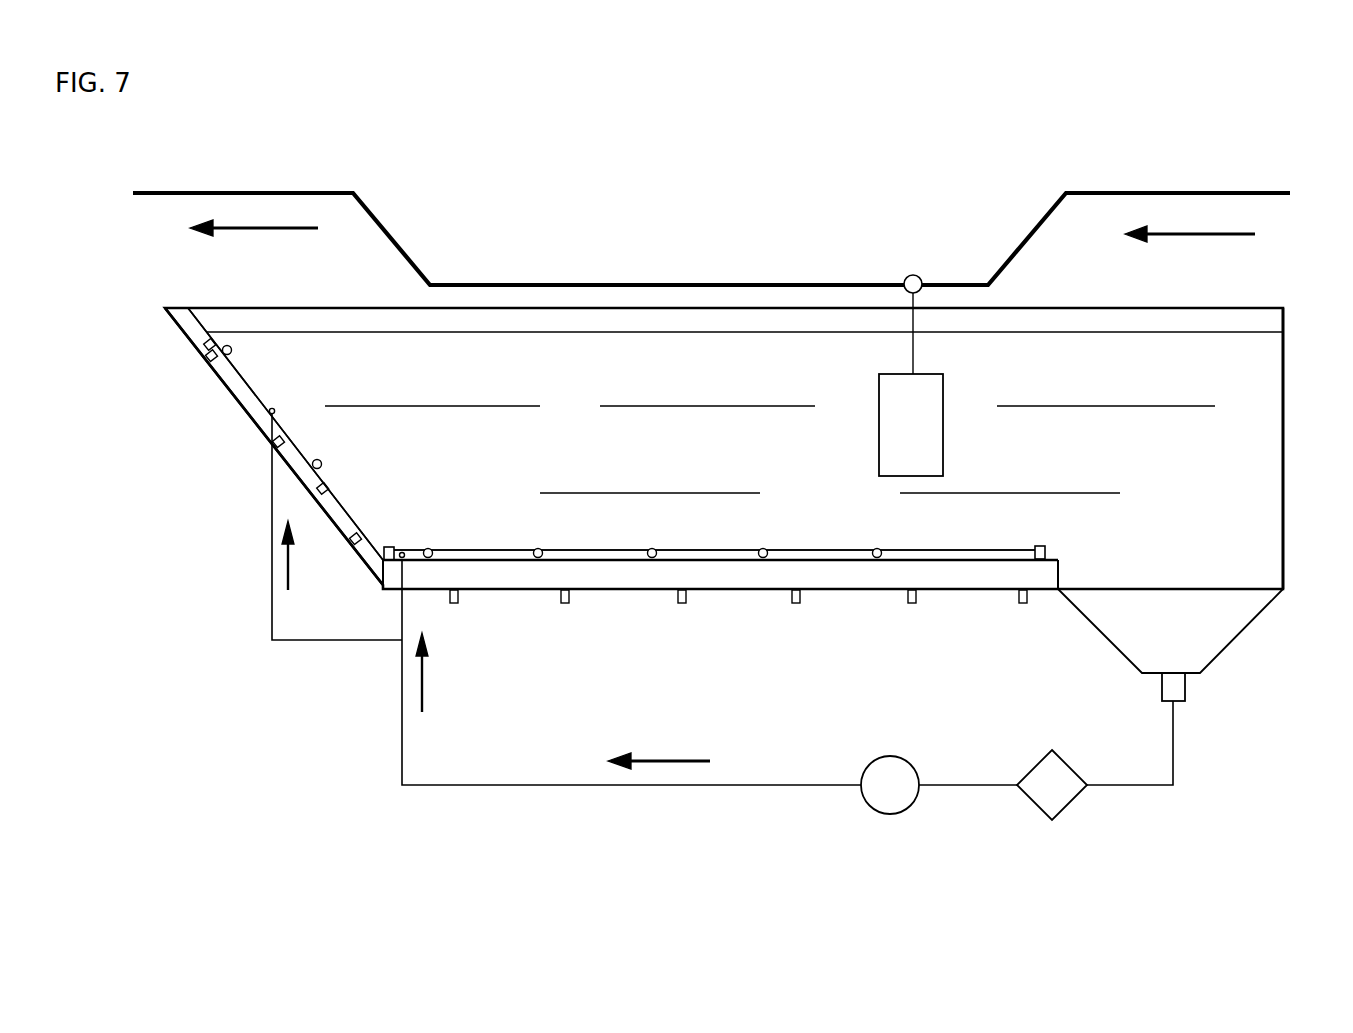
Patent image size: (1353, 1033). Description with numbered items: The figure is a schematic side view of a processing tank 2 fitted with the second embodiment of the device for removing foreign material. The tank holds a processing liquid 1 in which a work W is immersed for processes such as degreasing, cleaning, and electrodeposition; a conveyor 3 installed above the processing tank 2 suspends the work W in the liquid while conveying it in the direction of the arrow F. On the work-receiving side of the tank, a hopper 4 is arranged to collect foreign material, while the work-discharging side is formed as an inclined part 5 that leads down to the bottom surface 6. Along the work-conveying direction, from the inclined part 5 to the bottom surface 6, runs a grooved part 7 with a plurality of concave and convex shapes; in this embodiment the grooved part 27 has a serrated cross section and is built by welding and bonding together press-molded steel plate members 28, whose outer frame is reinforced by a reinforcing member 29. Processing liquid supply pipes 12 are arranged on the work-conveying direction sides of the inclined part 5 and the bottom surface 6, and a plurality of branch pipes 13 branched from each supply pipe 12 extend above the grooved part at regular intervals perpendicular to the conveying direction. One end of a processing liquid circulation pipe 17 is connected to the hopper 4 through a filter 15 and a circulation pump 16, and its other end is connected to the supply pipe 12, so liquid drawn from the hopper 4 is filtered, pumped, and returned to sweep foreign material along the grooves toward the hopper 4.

The processing liquid 1 is at (1140, 350).
The processing tank 2 is at (1283, 294).
The conveyor 3 is at (806, 283).
The work W is at (944, 390).
The arrow indicating work-conveying direction F is at (1190, 224).
The hopper 4 is at (1217, 638).
The inclined part 5 is at (228, 378).
The bottom surface 6 is at (571, 603).
The grooved part 7 is at (345, 507).
The processing liquid supply pipe 12 is at (296, 436).
The branch pipe 13 is at (236, 352).
The filter 15 is at (1067, 761).
The circulation pump 16 is at (905, 757).
The processing liquid circulation pipe 17 is at (475, 784).
The grooved part 27 is at (1056, 558).
The steel plate member 28 is at (1060, 572).
The reinforcing member 29 is at (912, 604).